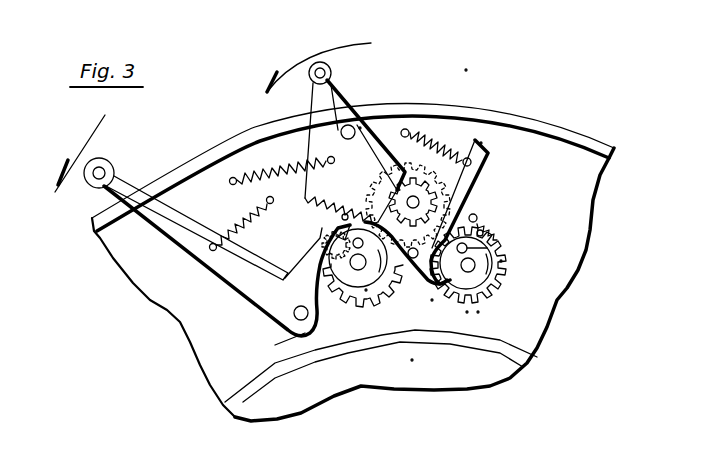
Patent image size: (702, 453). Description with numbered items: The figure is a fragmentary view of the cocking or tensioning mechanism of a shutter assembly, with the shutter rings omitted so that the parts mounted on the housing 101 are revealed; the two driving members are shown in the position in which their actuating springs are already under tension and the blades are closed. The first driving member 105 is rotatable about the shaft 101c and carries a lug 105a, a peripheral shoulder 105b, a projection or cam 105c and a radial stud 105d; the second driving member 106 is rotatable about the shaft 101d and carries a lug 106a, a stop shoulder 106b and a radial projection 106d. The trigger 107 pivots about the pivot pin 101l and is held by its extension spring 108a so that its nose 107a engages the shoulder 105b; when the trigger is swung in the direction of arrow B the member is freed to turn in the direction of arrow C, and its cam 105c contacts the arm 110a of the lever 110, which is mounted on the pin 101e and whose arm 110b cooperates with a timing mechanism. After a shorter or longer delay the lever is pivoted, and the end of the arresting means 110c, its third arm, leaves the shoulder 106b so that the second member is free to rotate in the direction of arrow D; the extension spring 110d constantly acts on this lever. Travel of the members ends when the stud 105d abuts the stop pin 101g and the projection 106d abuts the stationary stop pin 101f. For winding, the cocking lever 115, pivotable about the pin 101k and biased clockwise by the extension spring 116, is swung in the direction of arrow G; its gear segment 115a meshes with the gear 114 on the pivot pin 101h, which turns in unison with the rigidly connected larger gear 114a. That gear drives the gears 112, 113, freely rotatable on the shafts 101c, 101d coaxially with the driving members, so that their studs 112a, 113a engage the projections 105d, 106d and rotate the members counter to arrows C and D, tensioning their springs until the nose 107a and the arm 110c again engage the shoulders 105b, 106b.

The housing 101 is at (531, 120).
The shaft 101c is at (366, 292).
The shaft 101d is at (478, 312).
The pin 101e is at (413, 259).
The stop pin 101f is at (477, 215).
The stop pin 101g is at (342, 217).
The pivot pin 101h is at (351, 139).
The pin 101k is at (360, 128).
The pivot pin 101l is at (293, 318).
The driving member 105 is at (371, 290).
The lug 105a is at (352, 305).
The shoulder 105b is at (292, 254).
The projection or cam 105c is at (272, 296).
The radial stud or projection 105d is at (426, 288).
The driving member 106 is at (488, 298).
The lug 106a is at (499, 243).
The stop shoulder 106b is at (467, 312).
The projection or stud 106d is at (501, 261).
The trigger 107 is at (120, 187).
The nose 107a is at (330, 240).
The extension spring 108a is at (190, 229).
The lever 110 is at (467, 182).
The arm 110a is at (412, 360).
The arm 110b is at (481, 143).
The arresting means 110c is at (432, 300).
The extension spring 110d is at (464, 88).
The gear 112 is at (323, 282).
The stud or entraining means 112a is at (353, 212).
The gear 113 is at (495, 272).
The stud or entraining means 113a is at (478, 227).
The gear 114 is at (442, 147).
The larger gear 114a is at (409, 160).
The winding or cocking lever 115 is at (336, 96).
The gear segment 115a is at (303, 192).
The extension spring 116 is at (267, 167).
The arrow B is at (70, 160).
The arrow G is at (294, 60).
The arrow C is at (418, 385).
The arrow D is at (508, 276).